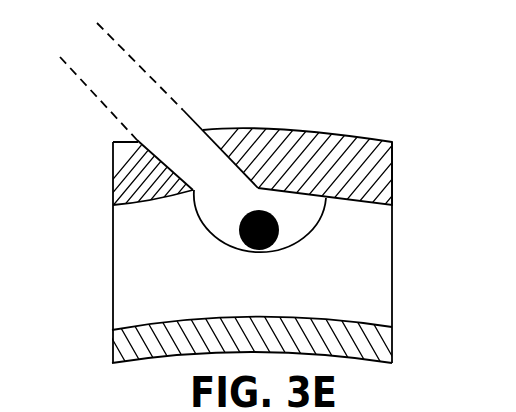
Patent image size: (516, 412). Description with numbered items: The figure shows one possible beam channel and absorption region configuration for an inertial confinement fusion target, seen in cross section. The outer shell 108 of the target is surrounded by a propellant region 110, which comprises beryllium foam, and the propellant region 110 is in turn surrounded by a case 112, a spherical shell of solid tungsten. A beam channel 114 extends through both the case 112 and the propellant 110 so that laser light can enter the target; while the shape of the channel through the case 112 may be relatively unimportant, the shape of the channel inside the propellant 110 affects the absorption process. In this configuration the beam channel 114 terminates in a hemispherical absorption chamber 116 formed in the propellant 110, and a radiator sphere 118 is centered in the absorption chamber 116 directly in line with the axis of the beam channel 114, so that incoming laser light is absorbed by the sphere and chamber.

The outer shell 108 is at (377, 348).
The propellant region 110 is at (377, 295).
The case 112 is at (278, 132).
The beam channel 114 is at (182, 160).
The hemispherical absorption chamber 116 is at (210, 207).
The radiator sphere 118 is at (233, 245).